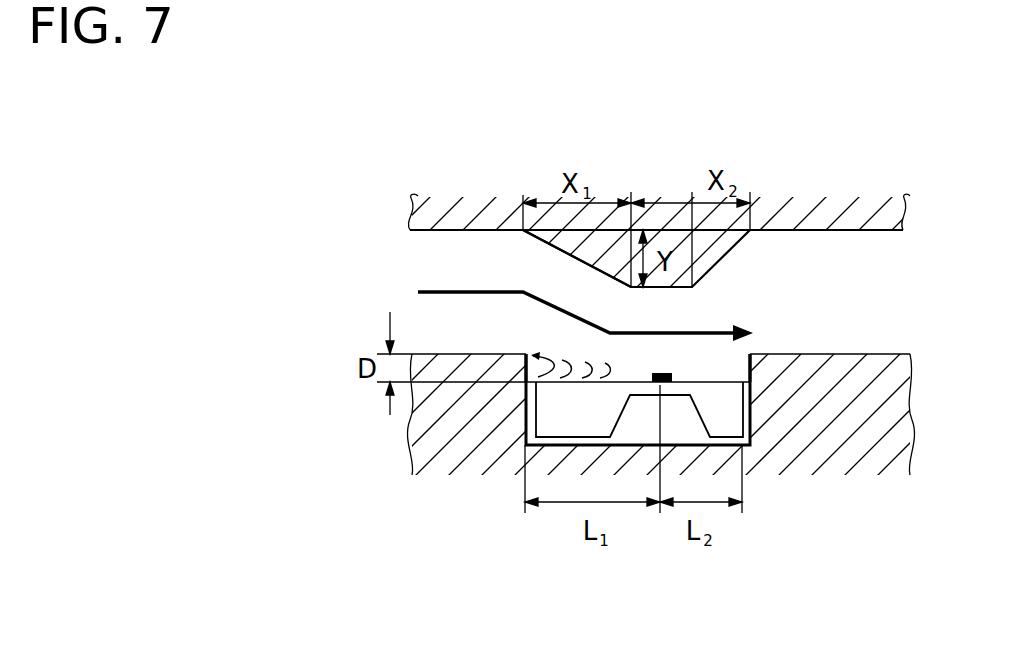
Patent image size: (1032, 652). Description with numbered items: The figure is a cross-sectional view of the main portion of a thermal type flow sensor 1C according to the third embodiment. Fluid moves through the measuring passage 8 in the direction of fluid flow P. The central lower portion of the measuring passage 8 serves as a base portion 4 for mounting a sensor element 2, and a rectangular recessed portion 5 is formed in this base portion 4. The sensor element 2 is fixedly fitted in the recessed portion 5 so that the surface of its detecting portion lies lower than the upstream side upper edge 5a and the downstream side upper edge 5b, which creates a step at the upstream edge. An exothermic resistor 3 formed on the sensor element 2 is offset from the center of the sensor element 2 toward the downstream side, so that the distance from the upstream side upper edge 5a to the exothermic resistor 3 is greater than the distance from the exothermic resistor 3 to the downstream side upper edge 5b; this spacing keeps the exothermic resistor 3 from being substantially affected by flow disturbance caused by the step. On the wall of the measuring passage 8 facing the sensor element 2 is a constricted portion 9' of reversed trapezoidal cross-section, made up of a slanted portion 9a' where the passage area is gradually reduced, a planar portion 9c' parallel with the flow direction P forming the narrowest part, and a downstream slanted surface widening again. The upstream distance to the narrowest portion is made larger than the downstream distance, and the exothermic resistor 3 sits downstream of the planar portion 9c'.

The thermal type flow sensor 1C is at (384, 165).
The sensor element 2 is at (625, 378).
The exothermic resistor 3 is at (663, 369).
The base portion 4 is at (413, 433).
The recessed portion 5 is at (745, 397).
The upstream side upper edge 5a is at (523, 352).
The downstream side upper edge 5b is at (752, 352).
The measuring passage 8 is at (437, 232).
The constricted portion 9' is at (665, 258).
The slanted portion 9a' is at (550, 258).
The planar portion 9c' is at (700, 305).
The direction of fluid flow P is at (447, 290).